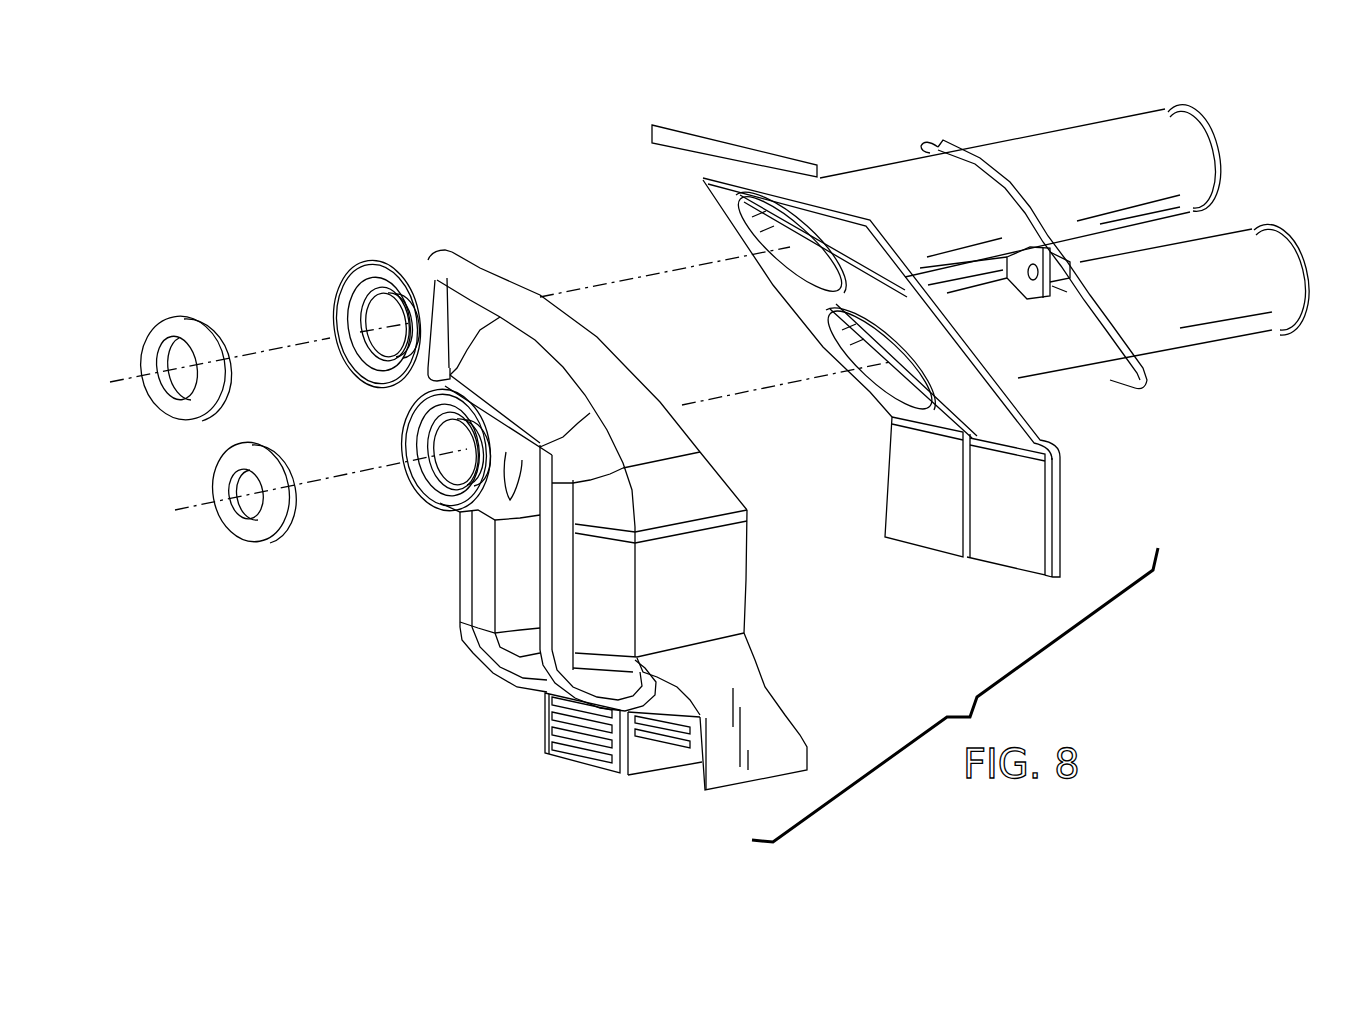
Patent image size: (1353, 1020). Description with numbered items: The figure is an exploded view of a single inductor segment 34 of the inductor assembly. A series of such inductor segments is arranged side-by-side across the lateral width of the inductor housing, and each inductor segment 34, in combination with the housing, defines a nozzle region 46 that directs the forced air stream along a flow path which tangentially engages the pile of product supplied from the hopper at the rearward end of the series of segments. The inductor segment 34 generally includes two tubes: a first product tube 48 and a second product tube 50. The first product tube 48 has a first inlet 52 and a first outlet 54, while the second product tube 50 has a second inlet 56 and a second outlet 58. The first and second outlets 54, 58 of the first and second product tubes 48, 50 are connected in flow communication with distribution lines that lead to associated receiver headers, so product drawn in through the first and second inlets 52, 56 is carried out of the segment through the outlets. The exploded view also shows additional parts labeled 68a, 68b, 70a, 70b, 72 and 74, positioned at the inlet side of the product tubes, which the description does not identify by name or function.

The inductor segment 34 is at (952, 317).
The nozzle region 46 is at (581, 756).
The first product tube 48 is at (485, 590).
The second product tube 50 is at (548, 509).
The first inlet 52 is at (453, 490).
The first outlet 54 is at (1304, 256).
The second inlet 56 is at (381, 309).
The second outlet 58 is at (1212, 140).
The first gasket 68a is at (231, 506).
The second gasket 68b is at (165, 380).
The first gasket aperture 70a is at (243, 487).
The second gasket aperture 70b is at (176, 363).
The second collar 72 is at (435, 432).
The first collar 74 is at (378, 275).